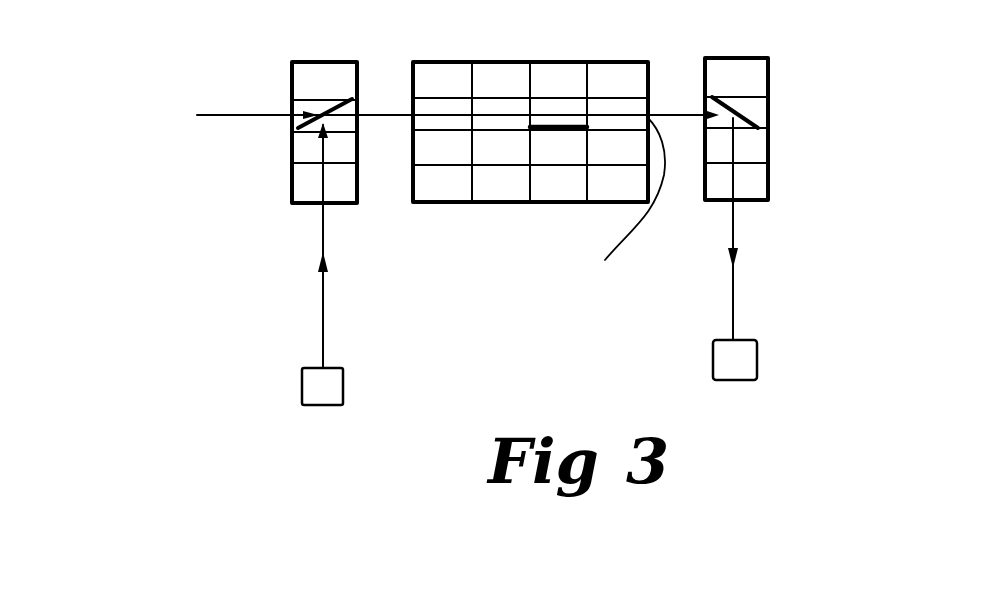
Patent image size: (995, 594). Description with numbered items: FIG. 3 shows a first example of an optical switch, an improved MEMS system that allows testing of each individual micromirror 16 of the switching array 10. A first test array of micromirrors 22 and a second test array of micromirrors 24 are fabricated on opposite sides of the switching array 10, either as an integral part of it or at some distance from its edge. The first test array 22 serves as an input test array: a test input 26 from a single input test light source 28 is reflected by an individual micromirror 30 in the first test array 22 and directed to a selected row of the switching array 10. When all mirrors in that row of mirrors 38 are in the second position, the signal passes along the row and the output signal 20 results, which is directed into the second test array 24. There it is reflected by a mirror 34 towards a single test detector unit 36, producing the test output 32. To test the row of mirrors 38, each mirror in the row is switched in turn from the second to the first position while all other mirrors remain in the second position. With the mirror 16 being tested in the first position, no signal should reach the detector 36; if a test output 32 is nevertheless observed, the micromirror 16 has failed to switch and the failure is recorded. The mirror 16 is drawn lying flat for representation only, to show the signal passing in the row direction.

The switching array 10 is at (488, 202).
The micromirror 16 is at (553, 127).
The output signal 20 is at (673, 110).
The first test array of micromirrors 22 is at (292, 192).
The second test array of micromirrors 24 is at (768, 170).
The test input 26 is at (323, 335).
The input test light source 28 is at (343, 392).
The micromirror 30 is at (336, 110).
The test output 32 is at (734, 287).
The mirror 34 is at (757, 111).
The test detector unit 36 is at (738, 363).
The row of mirrors 38 is at (628, 208).